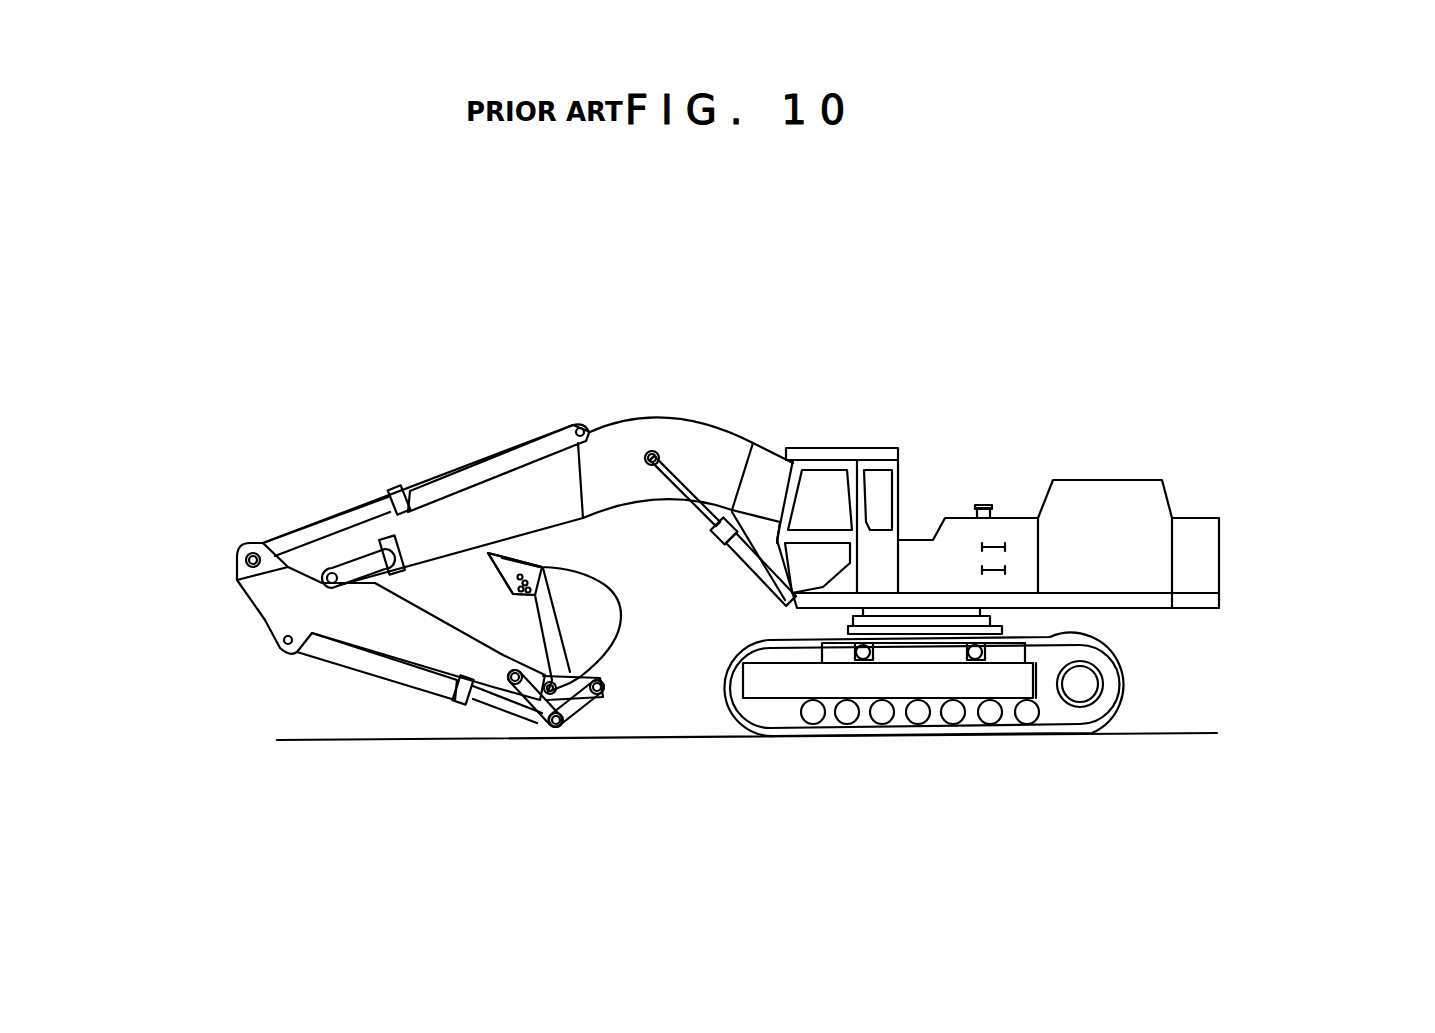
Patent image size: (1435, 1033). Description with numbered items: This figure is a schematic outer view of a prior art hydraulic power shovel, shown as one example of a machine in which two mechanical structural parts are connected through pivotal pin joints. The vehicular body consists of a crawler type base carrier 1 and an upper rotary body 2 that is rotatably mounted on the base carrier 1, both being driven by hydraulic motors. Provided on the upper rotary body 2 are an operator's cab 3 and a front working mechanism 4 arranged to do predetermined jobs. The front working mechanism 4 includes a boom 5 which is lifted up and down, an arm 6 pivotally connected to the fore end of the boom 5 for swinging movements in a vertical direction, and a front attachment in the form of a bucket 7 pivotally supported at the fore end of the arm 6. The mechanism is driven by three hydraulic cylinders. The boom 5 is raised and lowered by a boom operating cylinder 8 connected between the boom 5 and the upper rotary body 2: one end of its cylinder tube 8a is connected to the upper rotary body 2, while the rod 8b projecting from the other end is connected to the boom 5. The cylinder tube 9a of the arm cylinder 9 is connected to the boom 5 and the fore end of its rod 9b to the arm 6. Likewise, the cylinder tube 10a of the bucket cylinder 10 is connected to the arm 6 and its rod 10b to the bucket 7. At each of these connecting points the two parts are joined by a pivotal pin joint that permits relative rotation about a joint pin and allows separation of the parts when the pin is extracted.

The crawler type base carrier 1 is at (1127, 682).
The upper rotary body 2 is at (1235, 559).
The operator's cab 3 is at (897, 450).
The front working mechanism 4 is at (630, 412).
The boom 5 is at (710, 437).
The arm 6 is at (423, 650).
The bucket 7 is at (565, 587).
The boom operating cylinder 8 is at (767, 590).
The cylinder tube 8a is at (738, 553).
The rod 8b is at (690, 490).
The arm cylinder 9 is at (382, 480).
The cylinder tube 9a is at (437, 487).
The rod 9b is at (308, 532).
The bucket cylinder 10 is at (357, 679).
The cylinder tube 10a is at (323, 655).
The rod 10b is at (500, 707).